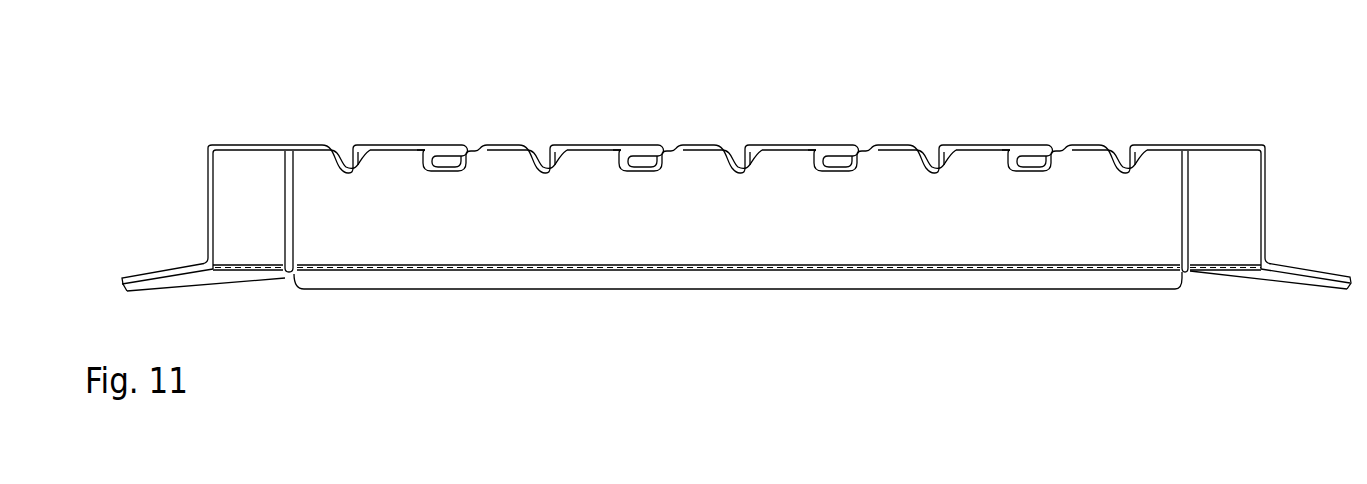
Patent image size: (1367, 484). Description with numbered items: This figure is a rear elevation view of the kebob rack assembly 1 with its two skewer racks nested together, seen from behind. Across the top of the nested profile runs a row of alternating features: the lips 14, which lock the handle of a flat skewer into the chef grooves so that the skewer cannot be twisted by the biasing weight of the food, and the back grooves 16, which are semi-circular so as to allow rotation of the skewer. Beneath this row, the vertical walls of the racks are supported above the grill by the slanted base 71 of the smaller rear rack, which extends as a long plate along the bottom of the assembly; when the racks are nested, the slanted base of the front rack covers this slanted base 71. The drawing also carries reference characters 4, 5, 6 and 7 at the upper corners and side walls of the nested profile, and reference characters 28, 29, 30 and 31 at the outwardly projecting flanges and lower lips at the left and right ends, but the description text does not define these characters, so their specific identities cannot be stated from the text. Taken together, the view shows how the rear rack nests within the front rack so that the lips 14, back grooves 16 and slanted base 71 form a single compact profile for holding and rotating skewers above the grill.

The kebob rack assembly 1 is at (625, 61).
The top sheet 4 is at (208, 145).
The right upper edge 5 is at (1263, 145).
The left side wall 6 is at (223, 181).
The right side wall 7 is at (1205, 183).
The lip 14 is at (1020, 145).
The back grooves 16 is at (1113, 163).
The left flange 28 is at (157, 268).
The right flange 29 is at (1300, 263).
The right bottom lip 30 is at (1238, 280).
The left bottom lip 31 is at (193, 280).
The slanted base 71 is at (712, 282).